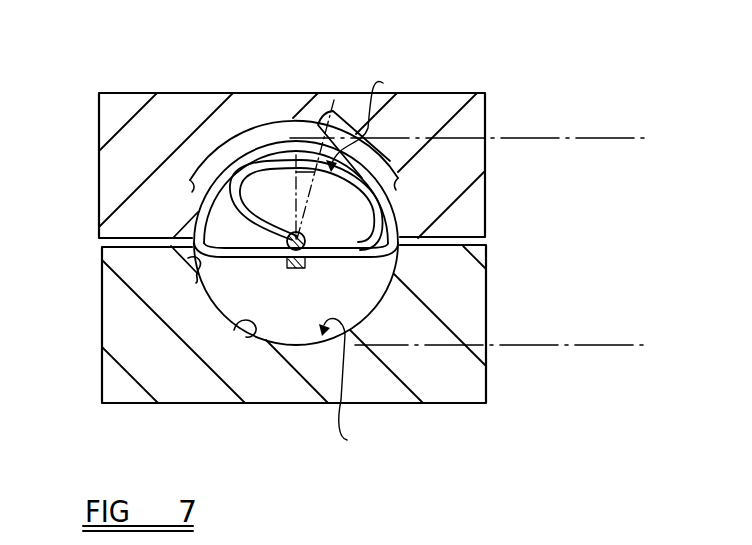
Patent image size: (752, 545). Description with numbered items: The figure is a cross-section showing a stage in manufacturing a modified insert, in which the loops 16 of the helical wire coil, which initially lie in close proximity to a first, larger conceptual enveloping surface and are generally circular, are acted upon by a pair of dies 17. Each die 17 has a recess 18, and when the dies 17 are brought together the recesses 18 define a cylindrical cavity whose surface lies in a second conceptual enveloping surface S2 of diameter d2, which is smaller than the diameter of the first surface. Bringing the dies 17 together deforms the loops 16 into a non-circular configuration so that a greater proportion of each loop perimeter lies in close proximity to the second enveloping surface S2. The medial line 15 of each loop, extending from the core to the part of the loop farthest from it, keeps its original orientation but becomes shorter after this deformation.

The medial line 15 is at (334, 100).
The loop 16 is at (361, 262).
The die 17 is at (186, 262).
The recess 18 is at (298, 117).
The second conceptual enveloping surface S2 is at (244, 343).
The diameter of second enveloping surface d2 is at (585, 342).